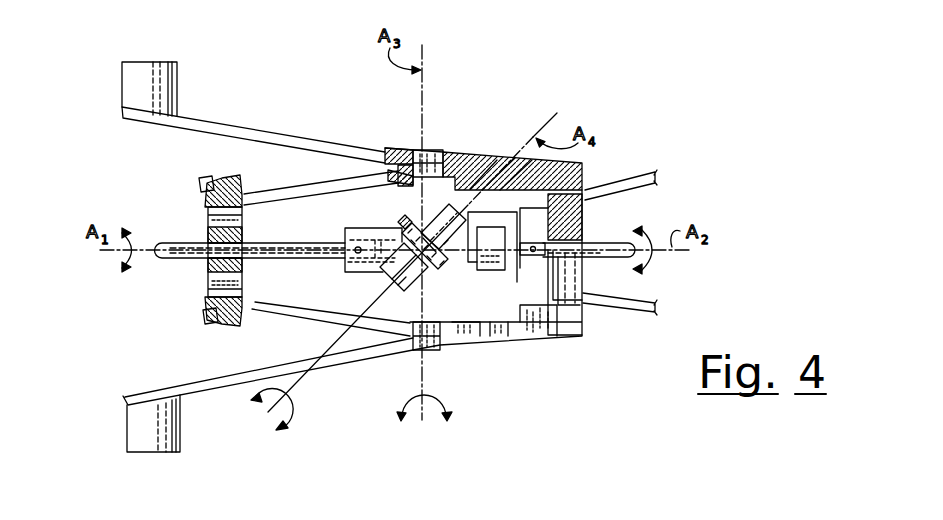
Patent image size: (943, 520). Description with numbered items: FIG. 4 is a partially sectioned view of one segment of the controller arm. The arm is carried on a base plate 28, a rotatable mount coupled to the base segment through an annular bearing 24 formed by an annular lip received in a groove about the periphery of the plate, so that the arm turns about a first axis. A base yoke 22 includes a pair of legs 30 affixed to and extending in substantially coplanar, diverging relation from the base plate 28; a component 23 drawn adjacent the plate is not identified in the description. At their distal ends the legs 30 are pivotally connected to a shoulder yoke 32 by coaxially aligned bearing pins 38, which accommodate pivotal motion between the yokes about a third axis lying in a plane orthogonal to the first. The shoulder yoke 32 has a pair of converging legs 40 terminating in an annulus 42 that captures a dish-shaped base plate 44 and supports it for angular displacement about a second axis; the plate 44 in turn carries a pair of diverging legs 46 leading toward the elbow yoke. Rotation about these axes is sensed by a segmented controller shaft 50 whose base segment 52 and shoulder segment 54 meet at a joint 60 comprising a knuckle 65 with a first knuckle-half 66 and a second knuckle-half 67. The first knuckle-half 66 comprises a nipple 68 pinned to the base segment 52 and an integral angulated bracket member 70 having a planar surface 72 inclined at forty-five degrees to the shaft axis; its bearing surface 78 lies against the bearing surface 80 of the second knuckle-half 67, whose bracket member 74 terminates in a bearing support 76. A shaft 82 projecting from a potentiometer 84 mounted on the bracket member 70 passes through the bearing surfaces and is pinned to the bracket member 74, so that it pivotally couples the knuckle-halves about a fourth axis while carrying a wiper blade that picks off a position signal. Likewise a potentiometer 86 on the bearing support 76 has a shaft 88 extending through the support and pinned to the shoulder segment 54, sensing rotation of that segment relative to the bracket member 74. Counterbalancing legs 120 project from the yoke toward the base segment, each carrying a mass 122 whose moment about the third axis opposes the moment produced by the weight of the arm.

The mass 122 is at (161, 66).
The legs 120 is at (270, 131).
The annular bearing 24 is at (217, 206).
The annulus 42 is at (217, 194).
The base plate 28 is at (211, 266).
The lock ring 23 is at (248, 312).
The legs 30 is at (326, 190).
The base yoke 22 is at (357, 179).
The base segment 52 is at (298, 259).
The shoulder segment 54 is at (603, 258).
The first knuckle-half 66 is at (348, 241).
The knuckle 65 is at (370, 228).
The segmented controller shaft 50 is at (334, 281).
The nipple 68 is at (362, 270).
The potentiometer 84 is at (399, 288).
The bracket member 70 is at (414, 232).
The planar surface 72 is at (427, 272).
The bearing surface 80 is at (418, 222).
The bracket member 74 is at (480, 218).
The shaft 82 is at (452, 237).
The bearing surface 78 is at (444, 216).
The shoulder yoke 32 is at (481, 147).
The bearing pins 38 is at (424, 162).
The converging legs 40 is at (458, 344).
The bearing support 76 is at (538, 263).
The base plate 44 is at (585, 212).
The shaft 88 is at (533, 246).
The potentiometer 86 is at (491, 248).
The second knuckle-half 67 is at (505, 262).
The joint 60 is at (437, 293).
The diverging legs 46 is at (641, 181).